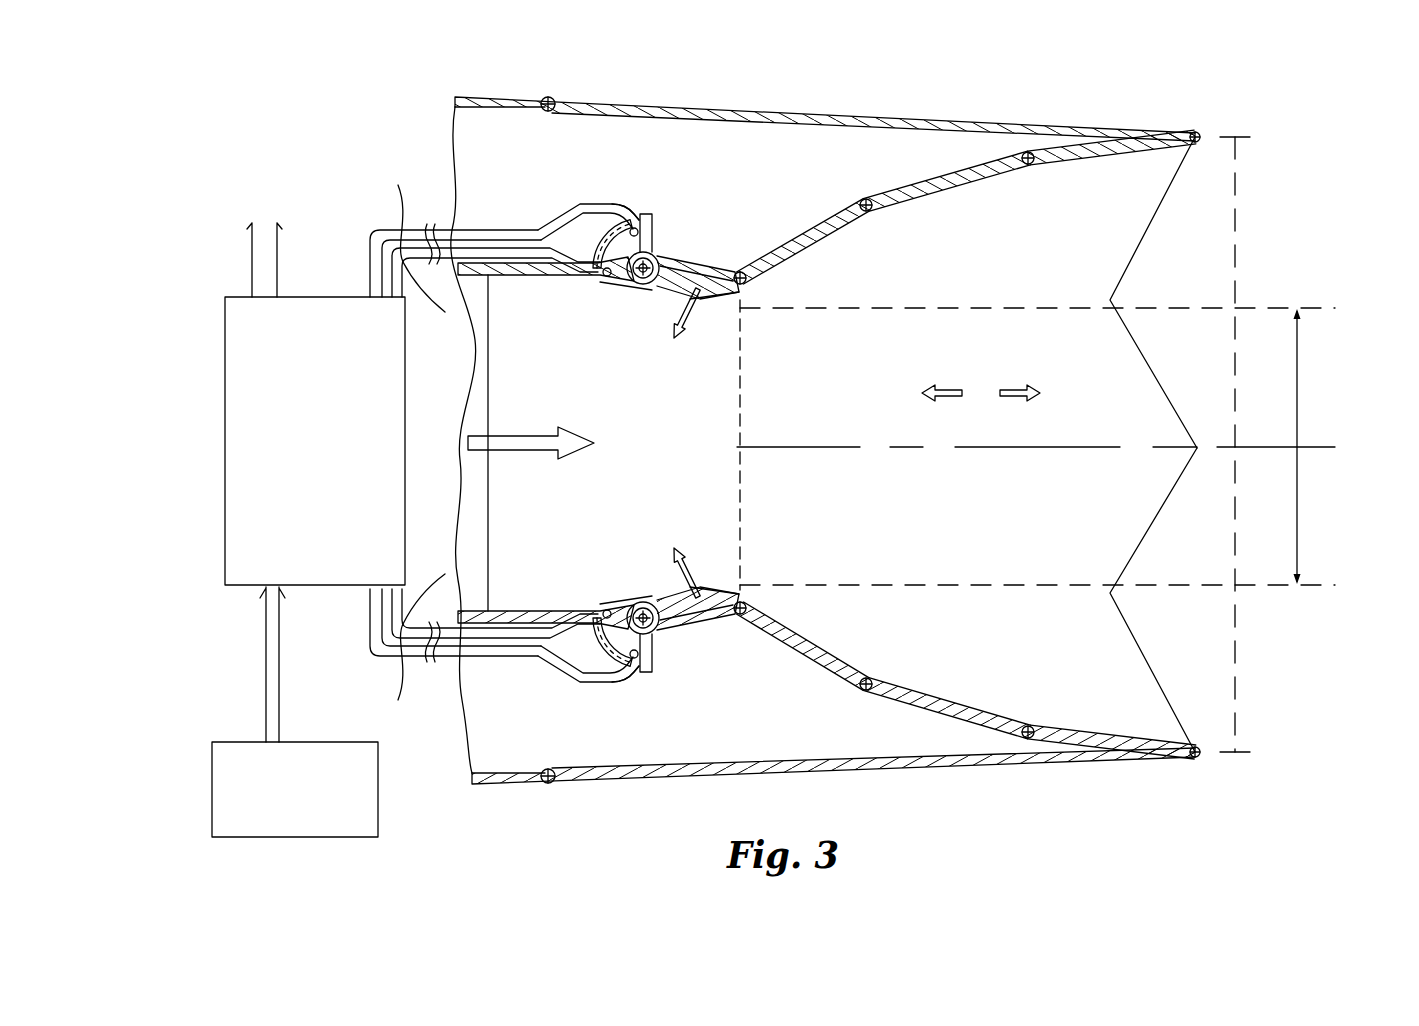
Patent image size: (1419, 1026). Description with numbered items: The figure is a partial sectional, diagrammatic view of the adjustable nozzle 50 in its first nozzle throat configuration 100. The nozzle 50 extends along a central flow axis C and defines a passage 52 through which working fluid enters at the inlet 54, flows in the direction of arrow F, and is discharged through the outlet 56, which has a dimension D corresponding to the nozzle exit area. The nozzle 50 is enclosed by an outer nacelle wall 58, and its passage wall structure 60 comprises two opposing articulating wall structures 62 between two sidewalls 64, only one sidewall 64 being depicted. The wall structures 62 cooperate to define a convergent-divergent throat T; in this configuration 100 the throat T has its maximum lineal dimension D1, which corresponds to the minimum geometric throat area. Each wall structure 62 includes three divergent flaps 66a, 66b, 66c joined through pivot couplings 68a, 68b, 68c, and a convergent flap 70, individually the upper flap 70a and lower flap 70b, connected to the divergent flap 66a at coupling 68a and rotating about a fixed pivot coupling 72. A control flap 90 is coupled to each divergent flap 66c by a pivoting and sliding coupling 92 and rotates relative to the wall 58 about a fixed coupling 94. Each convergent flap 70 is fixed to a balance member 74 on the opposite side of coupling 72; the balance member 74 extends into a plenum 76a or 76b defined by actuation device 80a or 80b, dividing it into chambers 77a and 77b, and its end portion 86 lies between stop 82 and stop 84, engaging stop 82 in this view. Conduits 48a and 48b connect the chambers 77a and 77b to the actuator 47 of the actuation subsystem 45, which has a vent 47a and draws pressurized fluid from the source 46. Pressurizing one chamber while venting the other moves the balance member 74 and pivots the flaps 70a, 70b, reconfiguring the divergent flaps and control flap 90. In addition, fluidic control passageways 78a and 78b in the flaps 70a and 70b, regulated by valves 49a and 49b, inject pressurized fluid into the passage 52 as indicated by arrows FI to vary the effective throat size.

The actuation subsystem 45 is at (223, 553).
The source 46 is at (284, 840).
The actuator 47 is at (327, 462).
The vent 47a is at (284, 260).
The conduit 48a is at (398, 226).
The conduit 48b is at (407, 260).
The flow control valve 49a is at (678, 320).
The flow control valve 49b is at (678, 566).
The nozzle 50 is at (933, 108).
The passage 52 is at (981, 393).
The inlet 54 is at (494, 280).
The outlet 56 is at (1180, 185).
The outer nacelle wall 58 is at (492, 96).
The passage wall structure 60 is at (1152, 721).
The articulating wall structure 62 is at (1062, 165).
The sidewall 64 is at (980, 542).
The divergent flap 66a is at (821, 247).
The divergent flap 66b is at (920, 180).
The divergent flap 66c is at (1100, 162).
The pivot coupling 68a is at (740, 289).
The pivot coupling 68b is at (868, 215).
The pivot coupling 68c is at (1022, 167).
The convergent flap 70 is at (720, 258).
The upper flap 70a is at (714, 264).
The lower flap 70b is at (682, 632).
The pivot coupling 72 is at (639, 286).
The balance member 74 is at (585, 218).
The plenum 76a is at (598, 298).
The plenum 76b is at (596, 588).
The chamber 77a is at (639, 230).
The chamber 77b is at (607, 278).
The fluidic control passageway 78a is at (697, 300).
The fluidic control passageway 78b is at (697, 588).
The actuation device 80a is at (647, 211).
The actuation device 80b is at (657, 684).
The stop 82 is at (576, 278).
The stop 84 is at (636, 214).
The end portion 86 is at (596, 252).
The control flap 90 is at (720, 124).
The coupling 92 is at (1196, 131).
The coupling 94 is at (546, 112).
The nozzle throat configuration 100 is at (1135, 305).
The arrow F is at (518, 432).
The arrow FI is at (690, 335).
The throat T is at (712, 398).
The central flow axis C is at (1268, 449).
The dimension D is at (1236, 657).
The dimension D1 is at (1298, 362).